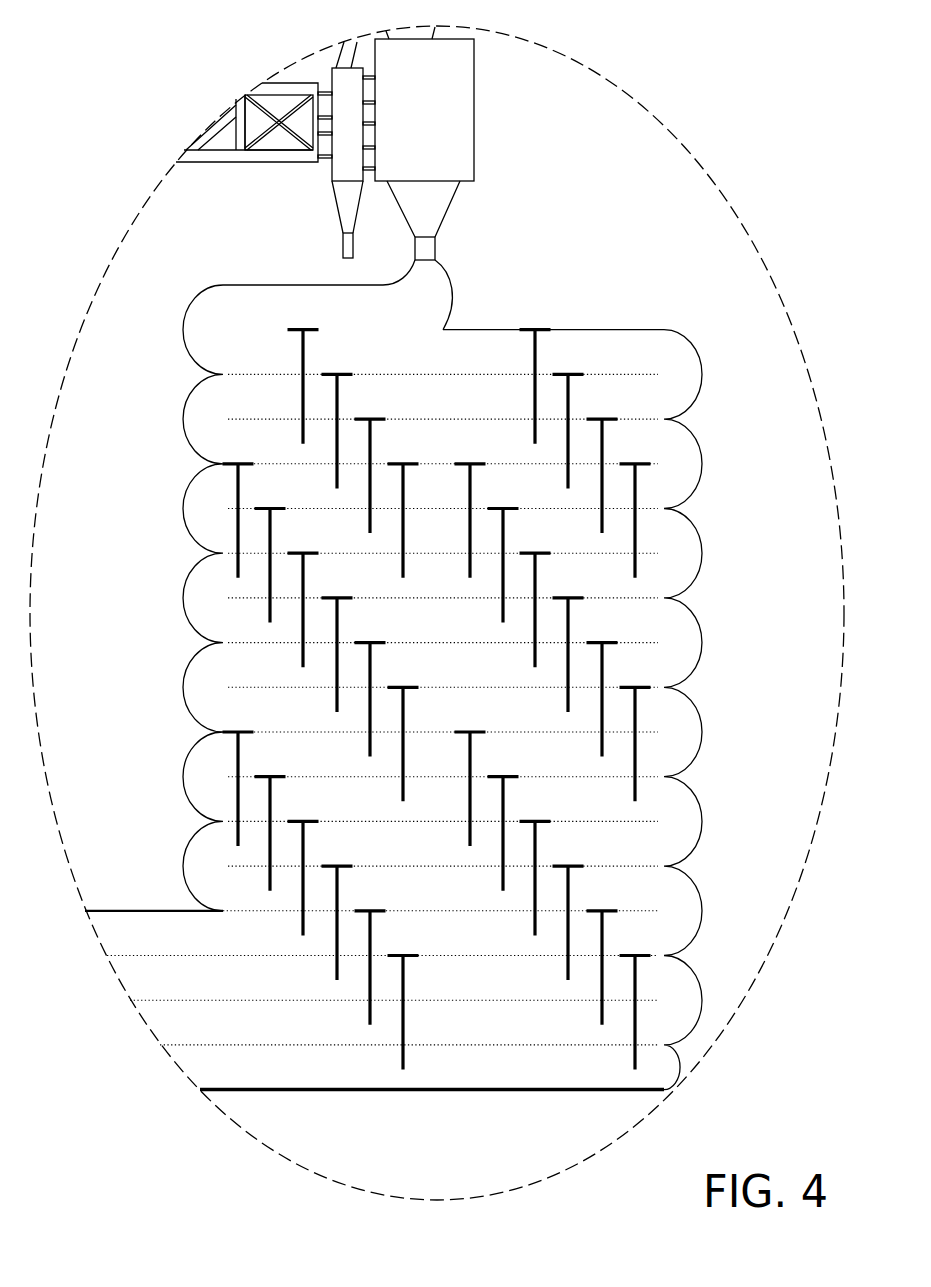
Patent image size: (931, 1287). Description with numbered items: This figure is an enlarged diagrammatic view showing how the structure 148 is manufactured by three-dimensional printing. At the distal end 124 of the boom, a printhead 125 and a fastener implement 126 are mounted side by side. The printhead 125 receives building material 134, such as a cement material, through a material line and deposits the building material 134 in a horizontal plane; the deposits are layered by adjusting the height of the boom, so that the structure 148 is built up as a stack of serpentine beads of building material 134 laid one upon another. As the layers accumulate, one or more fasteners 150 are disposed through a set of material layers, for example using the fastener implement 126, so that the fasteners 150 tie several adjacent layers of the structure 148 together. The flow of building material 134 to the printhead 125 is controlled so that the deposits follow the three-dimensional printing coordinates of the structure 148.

The distal end 124 is at (480, 143).
The printhead 125 is at (474, 128).
The fastener implement 126 is at (330, 172).
The building material 134 is at (568, 330).
The structure 148 is at (393, 669).
The fasteners 150 is at (235, 490).